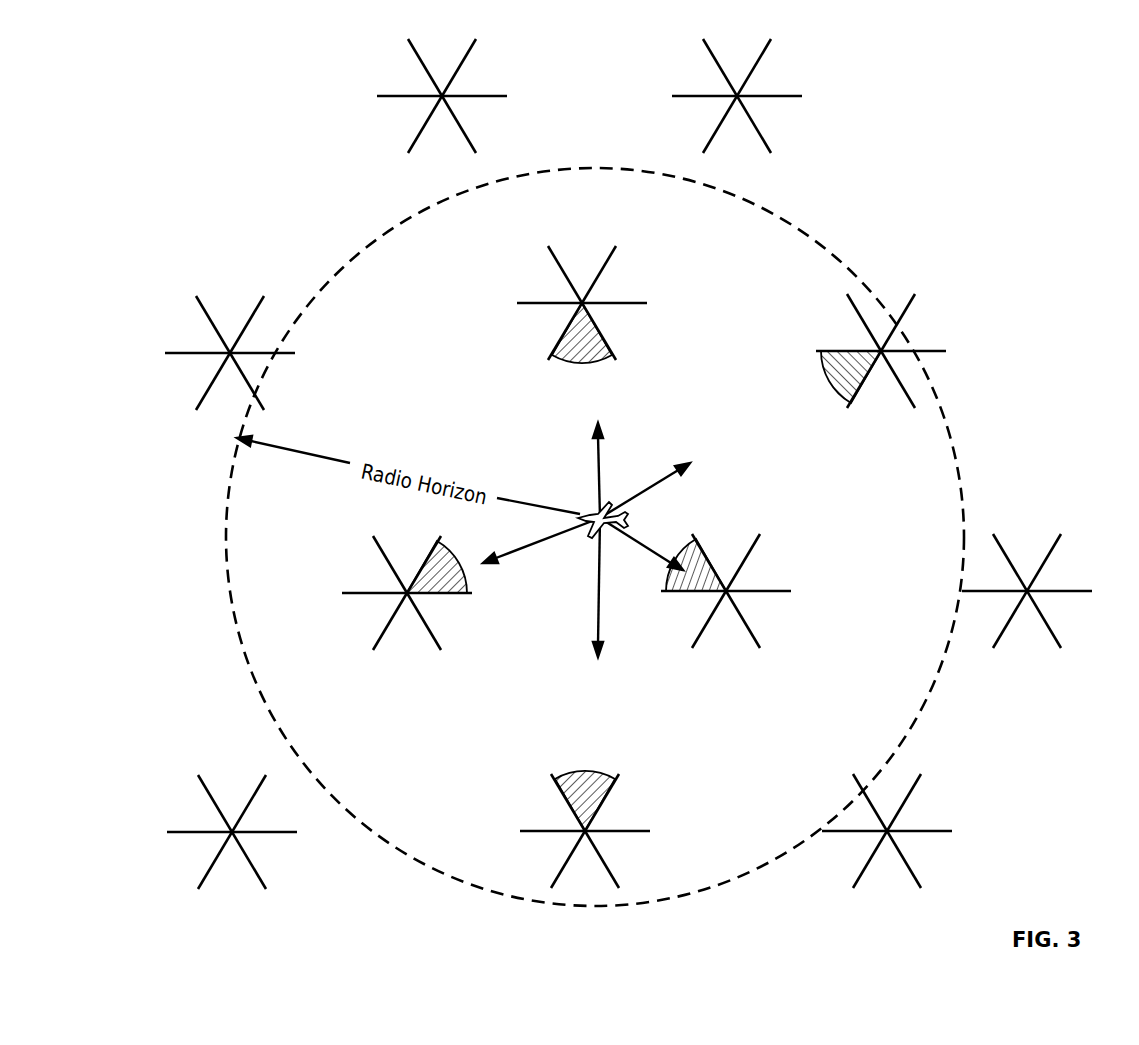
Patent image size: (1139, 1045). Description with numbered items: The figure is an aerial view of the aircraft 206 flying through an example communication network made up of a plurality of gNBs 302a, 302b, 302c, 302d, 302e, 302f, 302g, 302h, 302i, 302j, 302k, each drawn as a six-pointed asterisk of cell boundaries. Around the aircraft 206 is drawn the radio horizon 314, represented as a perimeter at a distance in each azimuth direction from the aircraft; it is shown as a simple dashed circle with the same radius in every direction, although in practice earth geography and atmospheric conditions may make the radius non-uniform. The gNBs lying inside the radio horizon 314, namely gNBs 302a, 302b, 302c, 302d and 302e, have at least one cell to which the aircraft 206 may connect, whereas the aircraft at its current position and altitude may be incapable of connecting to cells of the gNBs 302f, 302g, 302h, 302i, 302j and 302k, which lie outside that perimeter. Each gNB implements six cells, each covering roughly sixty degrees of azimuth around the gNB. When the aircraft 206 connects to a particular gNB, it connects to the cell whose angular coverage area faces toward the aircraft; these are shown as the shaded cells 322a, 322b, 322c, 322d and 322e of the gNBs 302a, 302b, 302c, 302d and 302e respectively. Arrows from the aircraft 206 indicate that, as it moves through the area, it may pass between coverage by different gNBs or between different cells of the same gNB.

The aircraft 206 is at (612, 512).
The radio horizon 314 is at (224, 545).
The gNB 302a is at (750, 550).
The gNB 302b is at (614, 879).
The gNB 302c is at (386, 557).
The gNB 302d is at (611, 260).
The gNB 302e is at (915, 302).
The gNB 302f is at (1058, 550).
The gNB 302g is at (919, 781).
The gNB 302h is at (208, 798).
The gNB 302i is at (204, 315).
The gNB 302j is at (472, 45).
The gNB 302k is at (765, 45).
The cell 322a is at (665, 578).
The cell 322b is at (578, 770).
The cell 322c is at (468, 583).
The cell 322d is at (572, 364).
The cell 322e is at (829, 388).